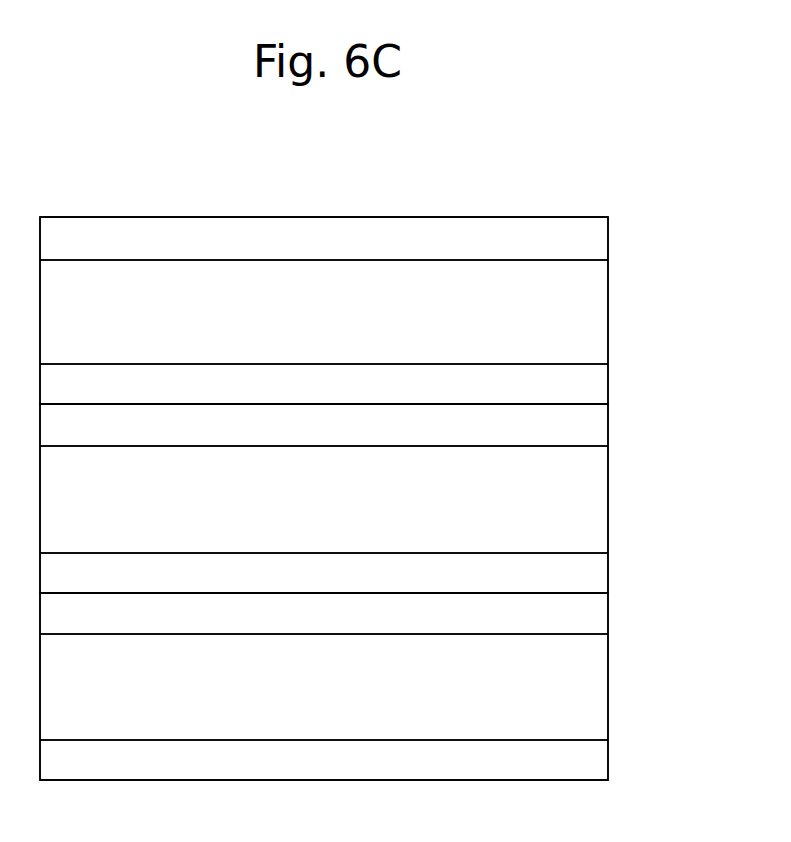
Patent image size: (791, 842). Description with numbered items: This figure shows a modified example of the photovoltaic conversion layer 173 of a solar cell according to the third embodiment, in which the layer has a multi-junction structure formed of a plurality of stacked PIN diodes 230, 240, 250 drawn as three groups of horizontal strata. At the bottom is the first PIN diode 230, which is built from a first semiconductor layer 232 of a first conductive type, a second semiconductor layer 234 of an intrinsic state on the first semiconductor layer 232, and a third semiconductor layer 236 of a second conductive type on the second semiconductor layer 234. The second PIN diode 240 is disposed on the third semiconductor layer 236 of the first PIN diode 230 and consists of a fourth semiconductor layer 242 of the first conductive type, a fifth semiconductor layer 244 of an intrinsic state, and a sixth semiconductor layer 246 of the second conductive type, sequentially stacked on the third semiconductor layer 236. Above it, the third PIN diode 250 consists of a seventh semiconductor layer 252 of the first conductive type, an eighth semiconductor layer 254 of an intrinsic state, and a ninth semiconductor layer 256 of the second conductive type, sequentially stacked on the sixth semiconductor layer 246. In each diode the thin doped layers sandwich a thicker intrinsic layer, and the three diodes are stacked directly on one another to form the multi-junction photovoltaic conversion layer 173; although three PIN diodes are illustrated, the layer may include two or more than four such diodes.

The photovoltaic conversion layer 173 is at (603, 168).
The third PIN diode 250 is at (687, 228).
The ninth semiconductor layer 256 is at (598, 238).
The eighth semiconductor layer 254 is at (598, 317).
The seventh semiconductor layer 252 is at (598, 385).
The second PIN diode 240 is at (687, 415).
The sixth semiconductor layer 246 is at (598, 427).
The fifth semiconductor layer 244 is at (598, 506).
The fourth semiconductor layer 242 is at (598, 574).
The first PIN diode 230 is at (687, 603).
The third semiconductor layer 236 is at (598, 614).
The second semiconductor layer 234 is at (598, 693).
The first semiconductor layer 232 is at (598, 762).